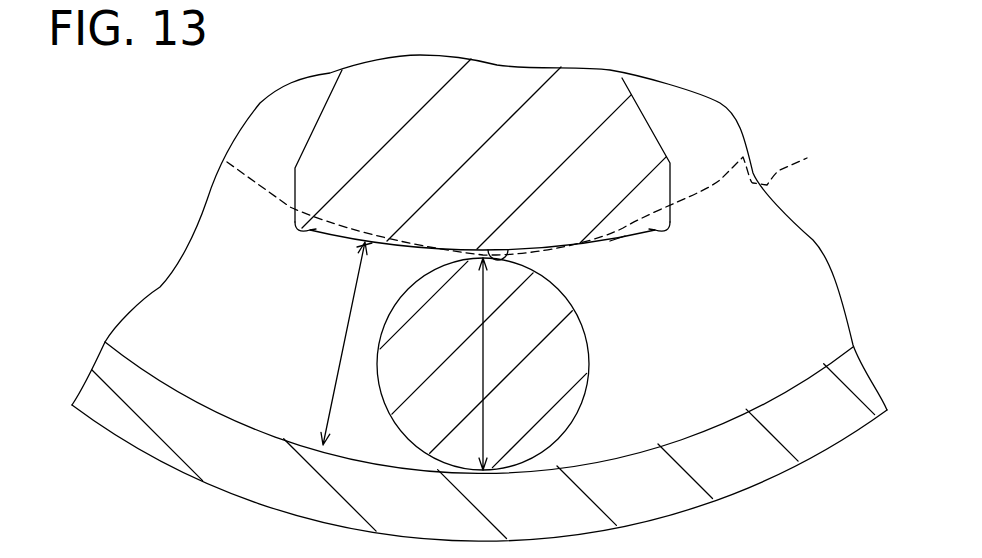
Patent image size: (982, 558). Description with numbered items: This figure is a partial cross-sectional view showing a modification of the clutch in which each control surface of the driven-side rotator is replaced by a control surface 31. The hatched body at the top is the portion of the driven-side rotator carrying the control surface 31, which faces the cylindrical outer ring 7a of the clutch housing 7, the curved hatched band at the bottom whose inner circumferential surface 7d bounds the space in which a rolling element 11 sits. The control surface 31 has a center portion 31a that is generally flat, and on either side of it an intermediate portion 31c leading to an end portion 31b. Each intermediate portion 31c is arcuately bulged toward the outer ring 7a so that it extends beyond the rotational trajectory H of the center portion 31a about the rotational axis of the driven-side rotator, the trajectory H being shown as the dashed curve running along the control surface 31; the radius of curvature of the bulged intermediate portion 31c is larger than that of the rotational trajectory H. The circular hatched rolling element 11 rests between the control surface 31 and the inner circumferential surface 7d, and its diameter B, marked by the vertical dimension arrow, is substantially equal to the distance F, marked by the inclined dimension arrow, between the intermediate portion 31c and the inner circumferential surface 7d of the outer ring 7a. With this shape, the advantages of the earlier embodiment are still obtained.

The clutch housing 7 is at (479, 305).
The outer ring 7a is at (680, 497).
The inner circumferential surface 7d is at (640, 448).
The rolling element 11 is at (577, 362).
The control surface 31 is at (469, 190).
The center portion 31a is at (513, 247).
The end portion 31b is at (302, 233).
The intermediate portion 31c is at (355, 250).
The diameter of the rolling element B is at (483, 357).
The distance F is at (341, 355).
The rotational trajectory H is at (534, 202).